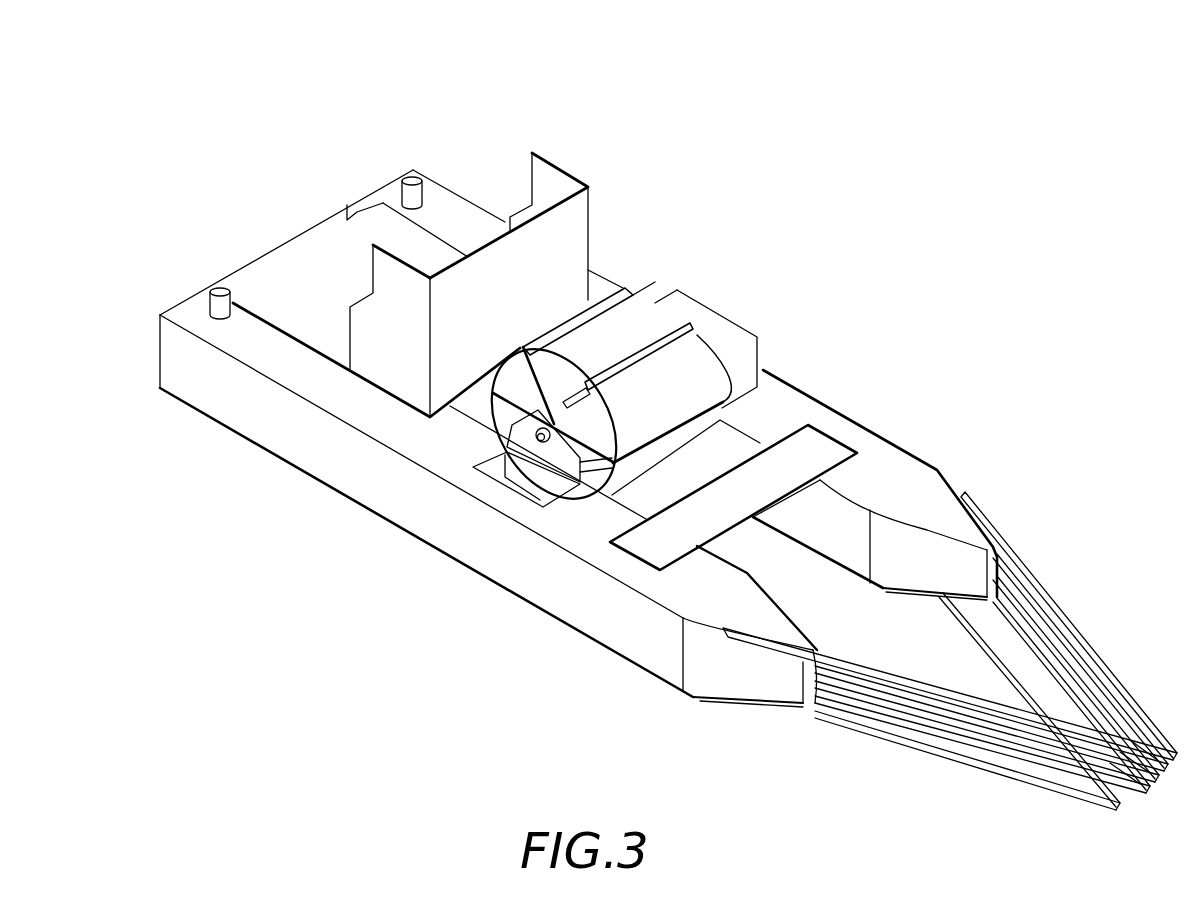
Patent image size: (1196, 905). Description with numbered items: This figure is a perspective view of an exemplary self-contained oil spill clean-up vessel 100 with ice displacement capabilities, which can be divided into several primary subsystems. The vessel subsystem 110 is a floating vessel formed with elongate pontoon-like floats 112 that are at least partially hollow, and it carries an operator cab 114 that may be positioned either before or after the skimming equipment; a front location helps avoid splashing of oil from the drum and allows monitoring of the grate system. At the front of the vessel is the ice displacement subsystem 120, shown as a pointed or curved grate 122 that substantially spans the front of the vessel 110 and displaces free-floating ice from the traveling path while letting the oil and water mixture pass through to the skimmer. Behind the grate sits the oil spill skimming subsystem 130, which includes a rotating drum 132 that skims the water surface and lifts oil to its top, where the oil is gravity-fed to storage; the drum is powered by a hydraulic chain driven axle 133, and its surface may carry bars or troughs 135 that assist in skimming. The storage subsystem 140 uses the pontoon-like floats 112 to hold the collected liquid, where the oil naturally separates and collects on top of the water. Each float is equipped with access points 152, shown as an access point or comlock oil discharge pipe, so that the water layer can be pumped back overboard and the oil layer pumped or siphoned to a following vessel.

The self-contained oil spill clean-up vessel 100 is at (947, 284).
The vessel subsystem 110 is at (679, 221).
The pontoon-like floats 112 is at (237, 422).
The operator cab 114 is at (593, 208).
The ice displacement subsystem 120 is at (1126, 609).
The grate 122 is at (910, 750).
The oil spill skimming subsystem 130 is at (690, 338).
The rotating drum 132 is at (697, 378).
The hydraulic chain driven axle 133 is at (737, 330).
The bars or troughs 135 is at (665, 300).
The storage subsystem 140 is at (903, 473).
The access points 152 is at (220, 292).